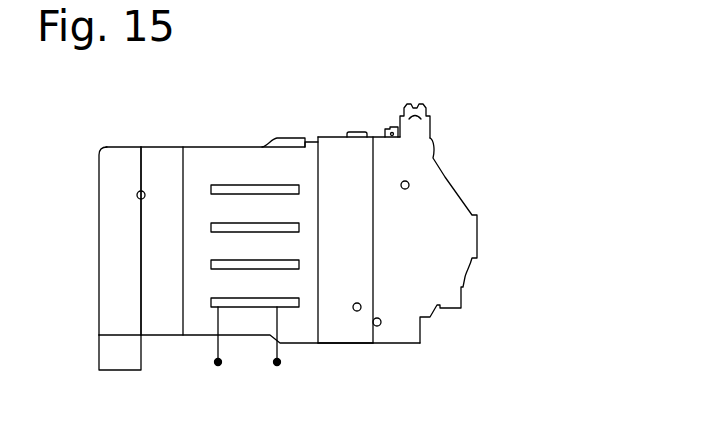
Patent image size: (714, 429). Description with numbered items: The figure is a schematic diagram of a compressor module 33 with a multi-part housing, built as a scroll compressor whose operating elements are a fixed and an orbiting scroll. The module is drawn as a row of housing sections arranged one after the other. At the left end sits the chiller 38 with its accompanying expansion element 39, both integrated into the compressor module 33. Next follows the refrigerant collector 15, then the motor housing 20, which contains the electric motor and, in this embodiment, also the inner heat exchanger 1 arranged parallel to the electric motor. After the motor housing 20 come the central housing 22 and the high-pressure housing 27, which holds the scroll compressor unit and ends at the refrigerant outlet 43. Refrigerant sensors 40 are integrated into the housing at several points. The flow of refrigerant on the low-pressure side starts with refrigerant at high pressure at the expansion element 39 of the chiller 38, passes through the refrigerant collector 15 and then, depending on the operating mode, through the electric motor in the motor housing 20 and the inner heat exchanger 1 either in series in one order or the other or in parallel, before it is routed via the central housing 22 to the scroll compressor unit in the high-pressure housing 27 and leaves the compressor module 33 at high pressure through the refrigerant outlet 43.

The inner heat exchanger 1 is at (299, 190).
The refrigerant collector 15 is at (162, 155).
The motor housing 20 is at (262, 148).
The central housing 22 is at (333, 330).
The high-pressure housing 27 is at (445, 293).
The compressor module 33 is at (363, 105).
The chiller 38 is at (118, 224).
The expansion element 39 is at (139, 356).
The refrigerant sensors 40 is at (138, 193).
The refrigerant outlet 43 is at (425, 111).